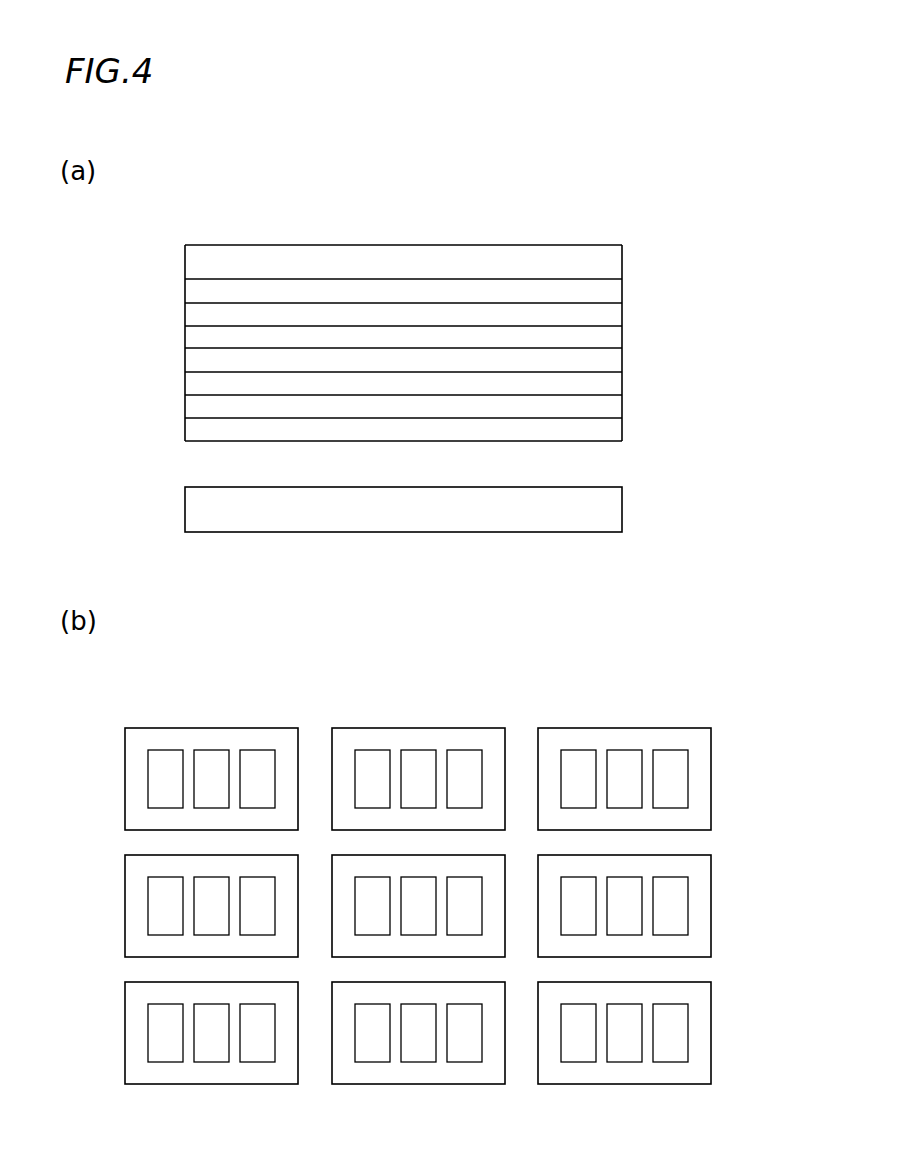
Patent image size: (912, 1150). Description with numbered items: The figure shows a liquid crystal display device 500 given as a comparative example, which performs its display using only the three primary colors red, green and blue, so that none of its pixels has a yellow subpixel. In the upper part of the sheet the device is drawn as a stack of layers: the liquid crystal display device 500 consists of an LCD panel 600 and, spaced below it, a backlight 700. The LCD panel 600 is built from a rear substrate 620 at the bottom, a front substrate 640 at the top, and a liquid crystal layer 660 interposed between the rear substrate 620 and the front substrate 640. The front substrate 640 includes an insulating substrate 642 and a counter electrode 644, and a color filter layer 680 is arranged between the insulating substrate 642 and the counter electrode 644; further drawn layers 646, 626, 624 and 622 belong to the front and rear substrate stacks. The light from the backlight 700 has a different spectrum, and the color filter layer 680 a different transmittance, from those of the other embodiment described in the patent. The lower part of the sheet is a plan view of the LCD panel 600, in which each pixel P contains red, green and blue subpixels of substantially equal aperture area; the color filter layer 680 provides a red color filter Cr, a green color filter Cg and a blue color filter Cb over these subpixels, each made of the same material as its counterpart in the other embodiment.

The liquid crystal display device 500 is at (753, 185).
The LCD panel 600 is at (660, 244).
The front substrate 640 is at (656, 279).
The insulating substrate 642 is at (190, 260).
The color filter layer 680 is at (190, 291).
The counter electrode 644 is at (190, 316).
The electrode layer 646 is at (190, 335).
The liquid crystal layer 660 is at (612, 363).
The rear substrate 620 is at (656, 428).
The electrode layer 626 is at (190, 385).
The substrate 624 is at (190, 407).
The polarizing layer 622 is at (190, 428).
The backlight 700 is at (618, 513).
The pixel P is at (108, 789).
The red color filter Cr is at (162, 762).
The green color filter Cg is at (207, 762).
The blue color filter Cb is at (253, 762).